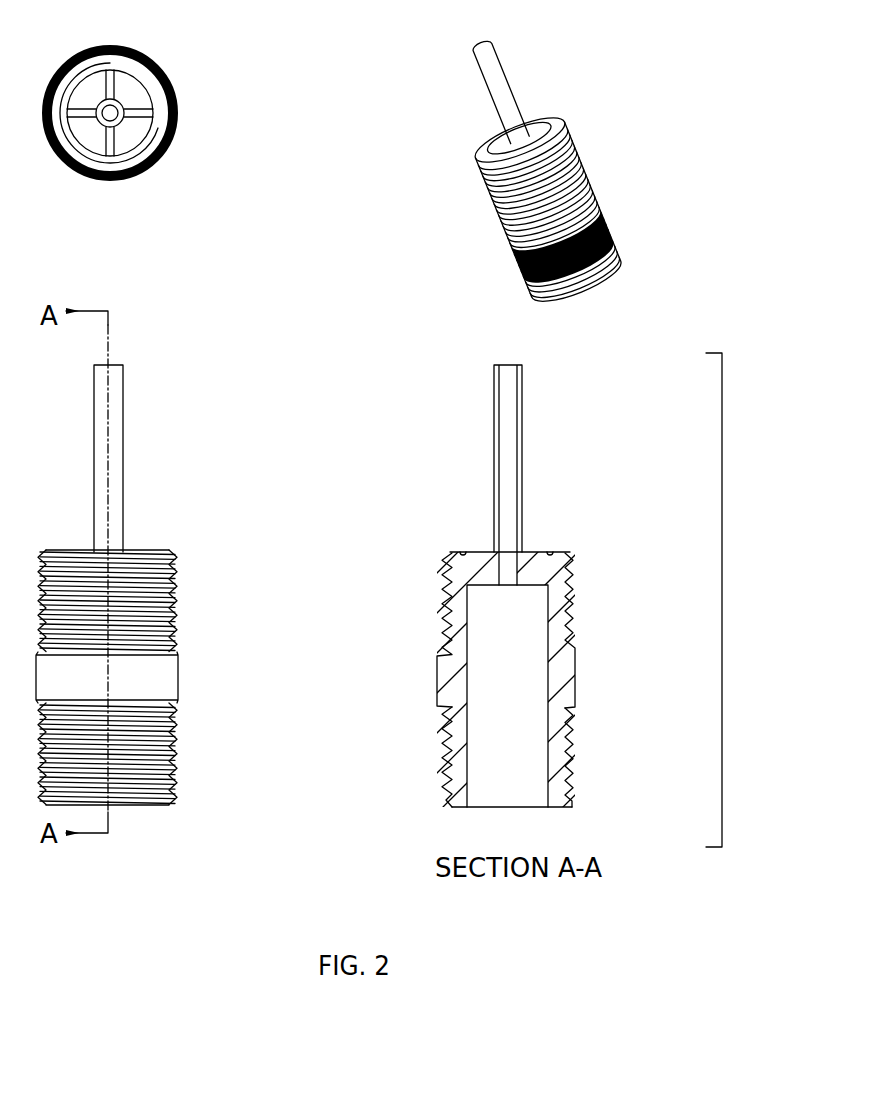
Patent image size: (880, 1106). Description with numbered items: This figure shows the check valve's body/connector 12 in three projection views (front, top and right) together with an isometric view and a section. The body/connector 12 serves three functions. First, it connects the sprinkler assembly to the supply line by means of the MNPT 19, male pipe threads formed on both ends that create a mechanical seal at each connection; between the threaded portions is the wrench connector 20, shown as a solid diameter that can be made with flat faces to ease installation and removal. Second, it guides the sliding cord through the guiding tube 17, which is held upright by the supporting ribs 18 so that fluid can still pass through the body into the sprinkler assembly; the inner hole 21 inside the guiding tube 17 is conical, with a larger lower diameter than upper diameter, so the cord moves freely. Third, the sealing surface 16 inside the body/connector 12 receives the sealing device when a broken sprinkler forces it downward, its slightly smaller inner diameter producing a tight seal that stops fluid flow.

The body/connector 12 is at (724, 640).
The sealing surface 16 is at (490, 808).
The guiding tube 17 is at (127, 482).
The supporting ribs 18 is at (127, 78).
The MNPT (Male National Pipe Thread) 19 is at (172, 767).
The wrench connector 20 is at (437, 674).
The inner hole 21 is at (514, 415).